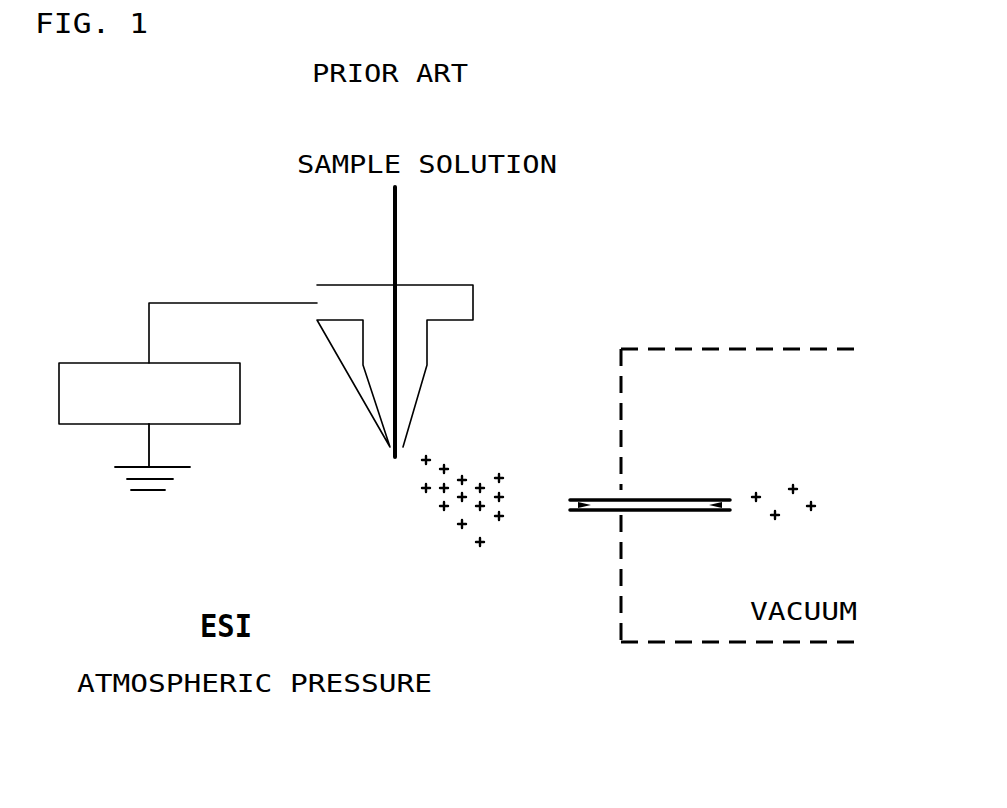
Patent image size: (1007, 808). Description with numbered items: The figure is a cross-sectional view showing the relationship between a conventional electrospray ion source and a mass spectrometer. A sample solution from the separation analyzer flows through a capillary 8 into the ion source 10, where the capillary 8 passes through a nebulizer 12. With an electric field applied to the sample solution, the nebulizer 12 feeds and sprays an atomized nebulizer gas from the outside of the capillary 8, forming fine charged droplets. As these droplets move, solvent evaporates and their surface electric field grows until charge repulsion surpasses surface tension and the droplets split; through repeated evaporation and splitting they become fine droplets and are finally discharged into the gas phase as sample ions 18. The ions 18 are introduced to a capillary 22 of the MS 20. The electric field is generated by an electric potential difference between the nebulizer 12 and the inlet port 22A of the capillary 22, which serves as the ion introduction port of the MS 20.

The capillary 8 is at (396, 218).
The ion source 10 is at (196, 205).
The nebulizer 12 is at (378, 410).
The ions 18 is at (482, 458).
The MS 20 is at (620, 378).
The capillary 22 is at (667, 518).
The inlet port 22A is at (578, 512).